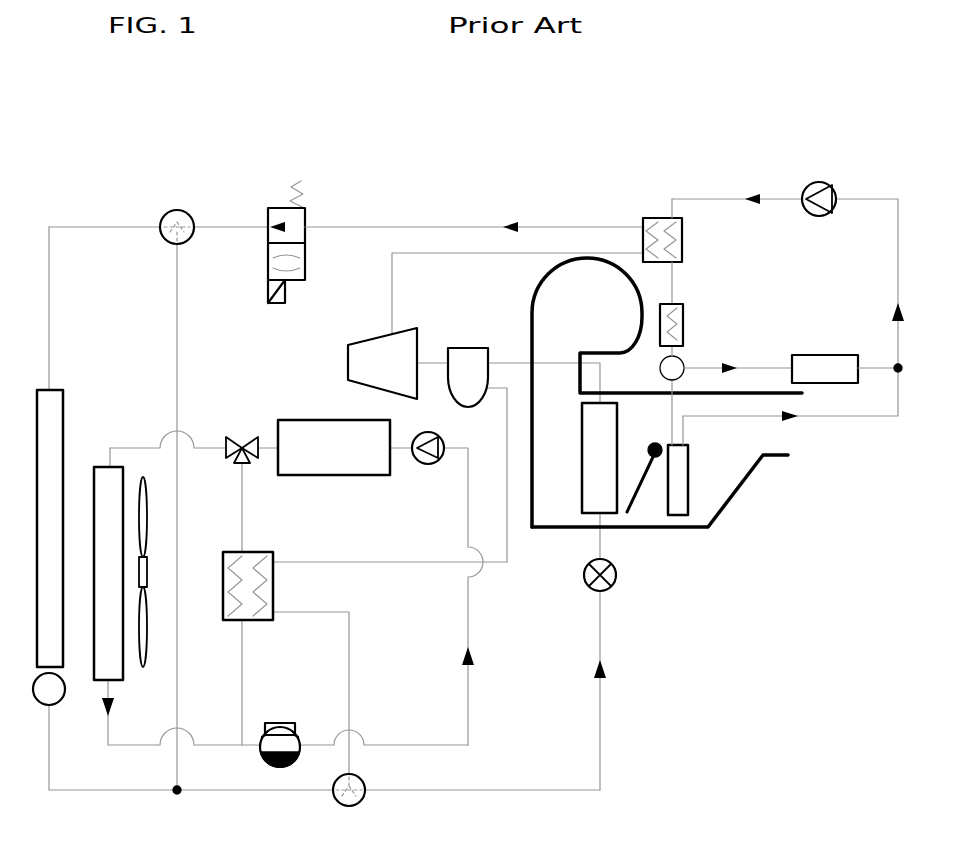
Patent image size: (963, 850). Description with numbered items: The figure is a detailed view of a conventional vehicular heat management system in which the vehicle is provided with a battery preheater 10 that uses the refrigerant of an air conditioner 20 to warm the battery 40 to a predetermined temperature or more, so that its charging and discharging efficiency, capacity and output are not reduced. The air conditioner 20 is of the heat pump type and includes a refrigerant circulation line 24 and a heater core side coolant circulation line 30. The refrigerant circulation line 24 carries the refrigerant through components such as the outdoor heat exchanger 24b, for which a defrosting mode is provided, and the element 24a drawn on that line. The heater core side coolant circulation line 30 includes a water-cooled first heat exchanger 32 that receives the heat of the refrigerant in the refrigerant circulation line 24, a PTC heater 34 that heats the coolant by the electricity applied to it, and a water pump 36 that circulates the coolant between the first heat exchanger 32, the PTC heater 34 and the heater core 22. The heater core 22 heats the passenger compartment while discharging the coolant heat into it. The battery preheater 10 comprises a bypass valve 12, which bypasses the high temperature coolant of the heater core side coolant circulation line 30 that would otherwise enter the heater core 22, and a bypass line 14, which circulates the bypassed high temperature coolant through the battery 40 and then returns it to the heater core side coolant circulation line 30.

The battery preheater 10 is at (805, 588).
The bypass valve 12 is at (682, 377).
The bypass line 14 is at (763, 368).
The air conditioner 20 is at (488, 217).
The heater core 22 is at (680, 508).
The refrigerant circulation line 24 is at (418, 227).
The expander 24a is at (368, 340).
The outdoor heat exchanger 24b is at (58, 405).
The heater core side coolant circulation line 30 is at (700, 199).
The first heat exchanger 32 is at (653, 218).
The PTC heater 34 is at (683, 303).
The water pump 36 is at (812, 182).
The battery 40 is at (848, 383).